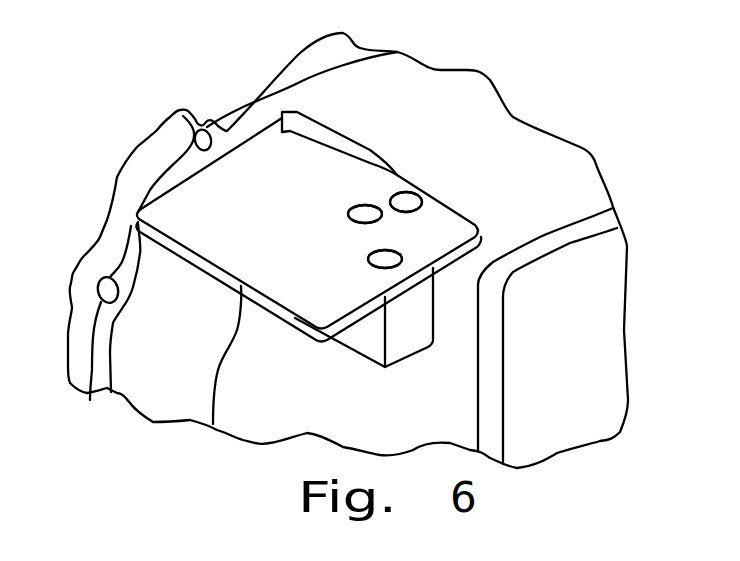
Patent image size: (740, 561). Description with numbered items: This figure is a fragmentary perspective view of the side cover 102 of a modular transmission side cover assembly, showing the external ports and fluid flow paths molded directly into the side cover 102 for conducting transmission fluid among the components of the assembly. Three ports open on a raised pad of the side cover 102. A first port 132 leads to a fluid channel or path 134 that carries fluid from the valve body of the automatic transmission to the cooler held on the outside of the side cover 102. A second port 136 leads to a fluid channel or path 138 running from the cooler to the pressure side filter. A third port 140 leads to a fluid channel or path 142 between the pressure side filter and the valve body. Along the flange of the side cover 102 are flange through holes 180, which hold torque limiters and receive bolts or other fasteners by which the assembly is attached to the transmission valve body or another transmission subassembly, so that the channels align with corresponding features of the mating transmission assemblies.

The side cover 102 is at (165, 373).
The flange through holes 180 is at (198, 133).
The first port 132 is at (368, 260).
The fluid channel or path 134 is at (385, 258).
The second port 136 is at (348, 214).
The fluid channel or path 138 is at (364, 213).
The third port 140 is at (423, 203).
The fluid channel or path 142 is at (404, 203).